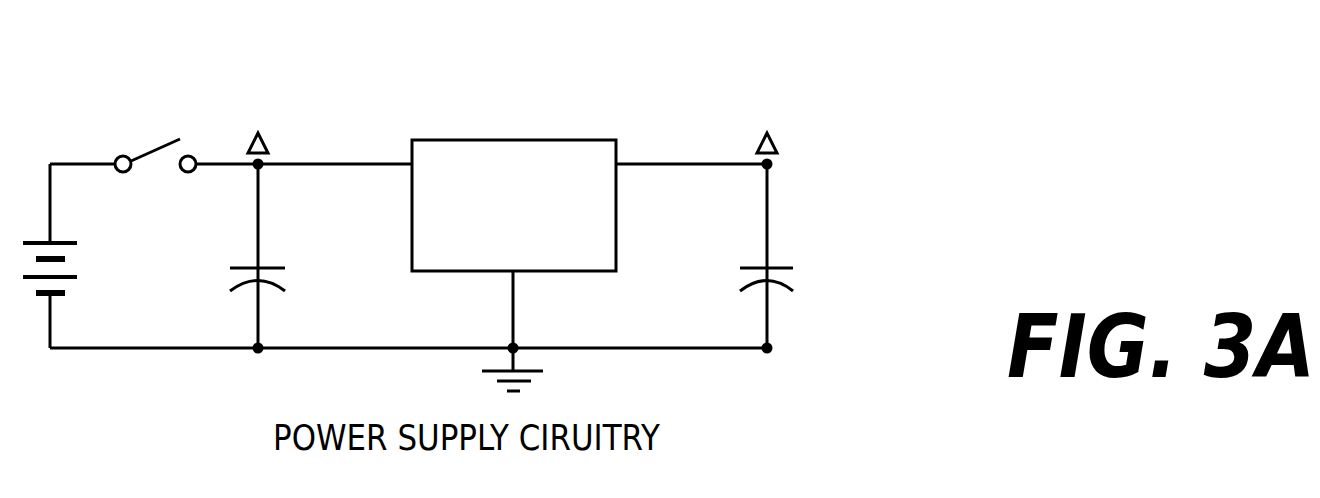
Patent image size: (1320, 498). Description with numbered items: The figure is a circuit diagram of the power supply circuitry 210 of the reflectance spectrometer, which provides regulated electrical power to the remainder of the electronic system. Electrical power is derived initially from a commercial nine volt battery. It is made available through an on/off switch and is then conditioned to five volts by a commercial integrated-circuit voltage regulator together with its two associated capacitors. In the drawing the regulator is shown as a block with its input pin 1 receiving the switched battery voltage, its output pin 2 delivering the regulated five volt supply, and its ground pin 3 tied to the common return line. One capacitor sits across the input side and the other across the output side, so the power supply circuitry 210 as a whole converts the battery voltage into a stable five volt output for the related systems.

The power supply circuitry 210 is at (858, 78).
The regulator input pin Vin 1 is at (335, 142).
The regulator output pin +5V 2 is at (691, 142).
The regulator ground pin GND 3 is at (512, 331).